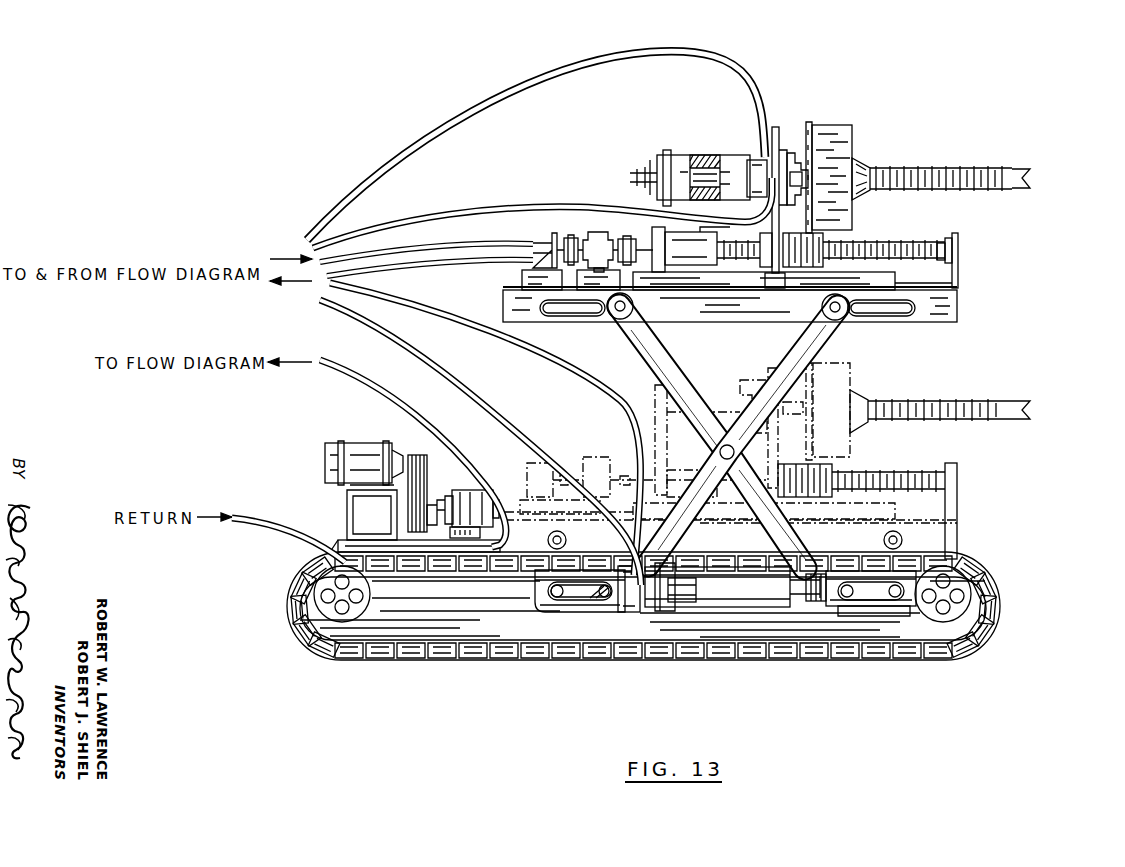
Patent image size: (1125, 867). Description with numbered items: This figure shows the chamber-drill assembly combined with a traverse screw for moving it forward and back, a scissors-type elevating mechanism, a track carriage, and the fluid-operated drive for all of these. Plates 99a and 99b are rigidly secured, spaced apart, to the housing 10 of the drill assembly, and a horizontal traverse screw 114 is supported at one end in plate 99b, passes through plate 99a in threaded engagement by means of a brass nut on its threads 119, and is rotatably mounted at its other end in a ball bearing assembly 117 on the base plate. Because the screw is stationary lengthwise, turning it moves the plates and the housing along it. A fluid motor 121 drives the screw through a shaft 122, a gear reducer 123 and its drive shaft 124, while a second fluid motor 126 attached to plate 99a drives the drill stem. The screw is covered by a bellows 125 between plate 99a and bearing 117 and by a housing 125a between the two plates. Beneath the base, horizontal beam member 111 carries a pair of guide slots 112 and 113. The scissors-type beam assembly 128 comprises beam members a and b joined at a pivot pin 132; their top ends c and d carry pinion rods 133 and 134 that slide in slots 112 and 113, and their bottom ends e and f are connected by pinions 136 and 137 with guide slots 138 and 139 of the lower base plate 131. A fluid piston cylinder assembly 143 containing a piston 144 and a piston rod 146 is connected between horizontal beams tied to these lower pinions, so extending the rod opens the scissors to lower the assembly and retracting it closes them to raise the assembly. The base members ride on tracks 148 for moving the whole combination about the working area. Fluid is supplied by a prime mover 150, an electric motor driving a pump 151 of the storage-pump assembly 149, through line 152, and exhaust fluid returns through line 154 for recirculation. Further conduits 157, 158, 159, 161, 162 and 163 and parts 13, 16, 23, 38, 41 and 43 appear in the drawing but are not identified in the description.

The housing 10 is at (700, 154).
The spindle motor 13 is at (683, 160).
The spindle nut 16 is at (708, 178).
The feed screw 23 is at (947, 167).
The coupling drum 38 is at (841, 125).
The cone coupling 41 is at (863, 165).
The flange 43 is at (792, 132).
The plate 99a is at (782, 150).
The plate 99b is at (660, 213).
The beam member 111 is at (958, 307).
The guide slot 112 is at (590, 314).
The guide slot 113 is at (905, 312).
The traverse screw 114 is at (930, 243).
The ball bearing assembly 117 is at (960, 247).
The threads 119 is at (872, 244).
The fluid motor 121 is at (550, 238).
The shaft 122 is at (585, 235).
The gear reducer 123 is at (599, 232).
The drive shaft 124 is at (642, 246).
The bellows 125 is at (815, 235).
The housing 125a is at (718, 243).
The fluid motor 126 is at (771, 135).
The scissors-type beam assembly 128 is at (718, 408).
The base plate 131 is at (545, 612).
The pivot pin 132 is at (712, 449).
The pinion rod 133 is at (621, 320).
The pinion rod 134 is at (846, 322).
The pinion 136 is at (836, 592).
The pinion 137 is at (625, 608).
The guide slot 138 is at (902, 594).
The guide slot 139 is at (581, 600).
The fluid piston cylinder assembly 143 is at (769, 600).
The piston 144 is at (682, 592).
The piston rod 146 is at (813, 592).
The tracks 148 is at (992, 578).
The storage-pump assembly 149 is at (336, 546).
The prime mover 150 is at (352, 445).
The pump 151 is at (460, 488).
The line 152 is at (452, 450).
The line 154 is at (244, 514).
The hose 157 is at (490, 209).
The hose 158 is at (478, 98).
The hose 159 is at (430, 275).
The hose 161 is at (445, 247).
The hose 162 is at (521, 342).
The hose 163 is at (441, 356).
The beam member a is at (674, 378).
The beam member b is at (815, 350).
The top end c is at (612, 339).
The top end d is at (851, 318).
The bottom end e is at (850, 598).
The bottom end f is at (608, 600).